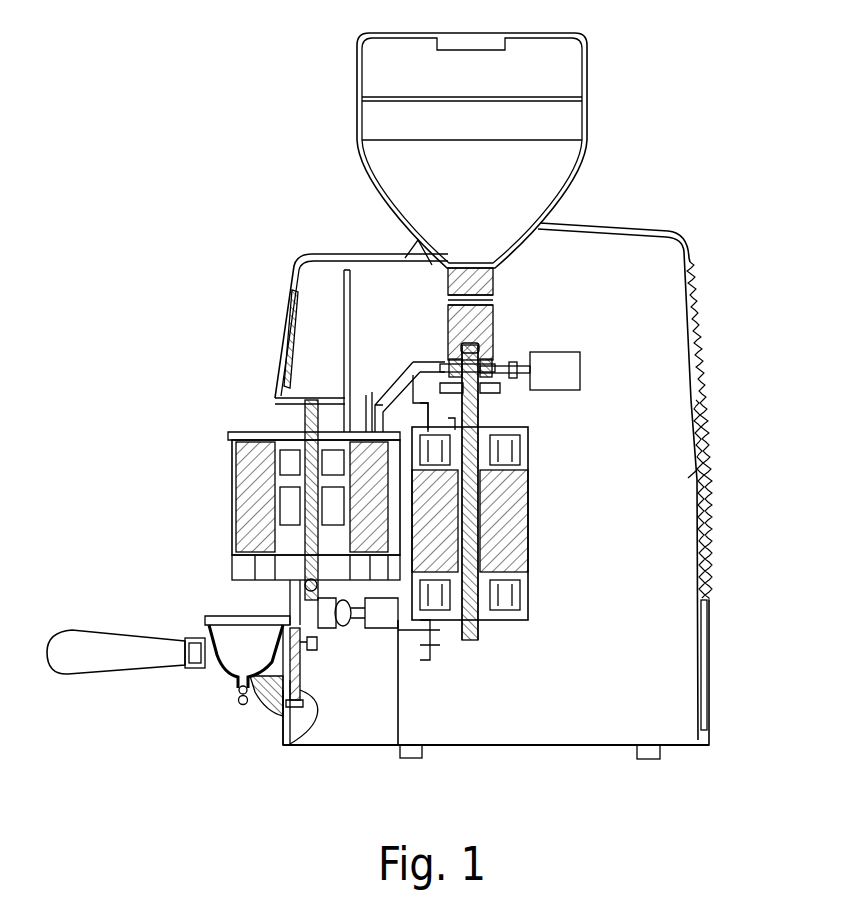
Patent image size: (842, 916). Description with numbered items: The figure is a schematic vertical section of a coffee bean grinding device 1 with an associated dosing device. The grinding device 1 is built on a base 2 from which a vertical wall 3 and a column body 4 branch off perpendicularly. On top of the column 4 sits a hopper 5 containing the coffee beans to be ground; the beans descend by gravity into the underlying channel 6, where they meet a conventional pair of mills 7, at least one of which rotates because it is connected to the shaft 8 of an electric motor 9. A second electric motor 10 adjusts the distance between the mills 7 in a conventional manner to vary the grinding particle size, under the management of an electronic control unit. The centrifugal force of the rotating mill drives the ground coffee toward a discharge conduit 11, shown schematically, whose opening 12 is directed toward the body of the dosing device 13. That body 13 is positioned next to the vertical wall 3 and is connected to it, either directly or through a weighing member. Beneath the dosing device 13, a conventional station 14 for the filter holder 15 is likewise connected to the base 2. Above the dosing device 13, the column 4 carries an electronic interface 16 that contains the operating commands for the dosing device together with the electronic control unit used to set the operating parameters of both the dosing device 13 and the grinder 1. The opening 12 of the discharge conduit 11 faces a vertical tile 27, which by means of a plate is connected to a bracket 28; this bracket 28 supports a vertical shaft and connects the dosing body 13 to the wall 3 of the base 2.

The grinding device 1 is at (717, 278).
The base 2 is at (548, 748).
The wall 3 is at (397, 678).
The column body 4 is at (697, 470).
The hopper 5 is at (577, 162).
The channel 6 is at (490, 322).
The pair of mills 7 is at (488, 368).
The shaft 8 is at (515, 408).
The electric motor 9 is at (508, 518).
The electric motor 10 is at (570, 352).
The discharge conduit 11 is at (427, 368).
The opening 12 is at (374, 412).
The dosing device 13 is at (236, 422).
The station 14 is at (284, 745).
The filter holder 15 is at (213, 615).
The electronic interface 16 is at (286, 328).
The vertical tile 27 is at (398, 412).
The bracket 28 is at (270, 462).